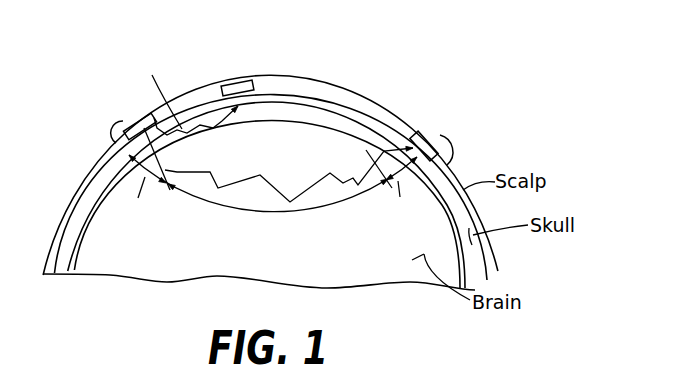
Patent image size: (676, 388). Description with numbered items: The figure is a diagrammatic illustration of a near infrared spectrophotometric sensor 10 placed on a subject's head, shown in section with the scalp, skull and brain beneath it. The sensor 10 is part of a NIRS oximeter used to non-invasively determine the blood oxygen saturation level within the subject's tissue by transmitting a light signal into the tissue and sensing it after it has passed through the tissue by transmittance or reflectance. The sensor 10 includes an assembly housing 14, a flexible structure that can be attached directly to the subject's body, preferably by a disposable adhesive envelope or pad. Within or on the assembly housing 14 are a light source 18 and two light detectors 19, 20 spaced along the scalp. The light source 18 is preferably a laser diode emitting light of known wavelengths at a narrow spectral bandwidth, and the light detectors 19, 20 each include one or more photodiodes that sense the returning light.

The sensor 10 is at (315, 126).
The assembly housing 14 is at (342, 83).
The light source 18 is at (133, 120).
The light detector 19 is at (233, 83).
The light detector 20 is at (417, 137).